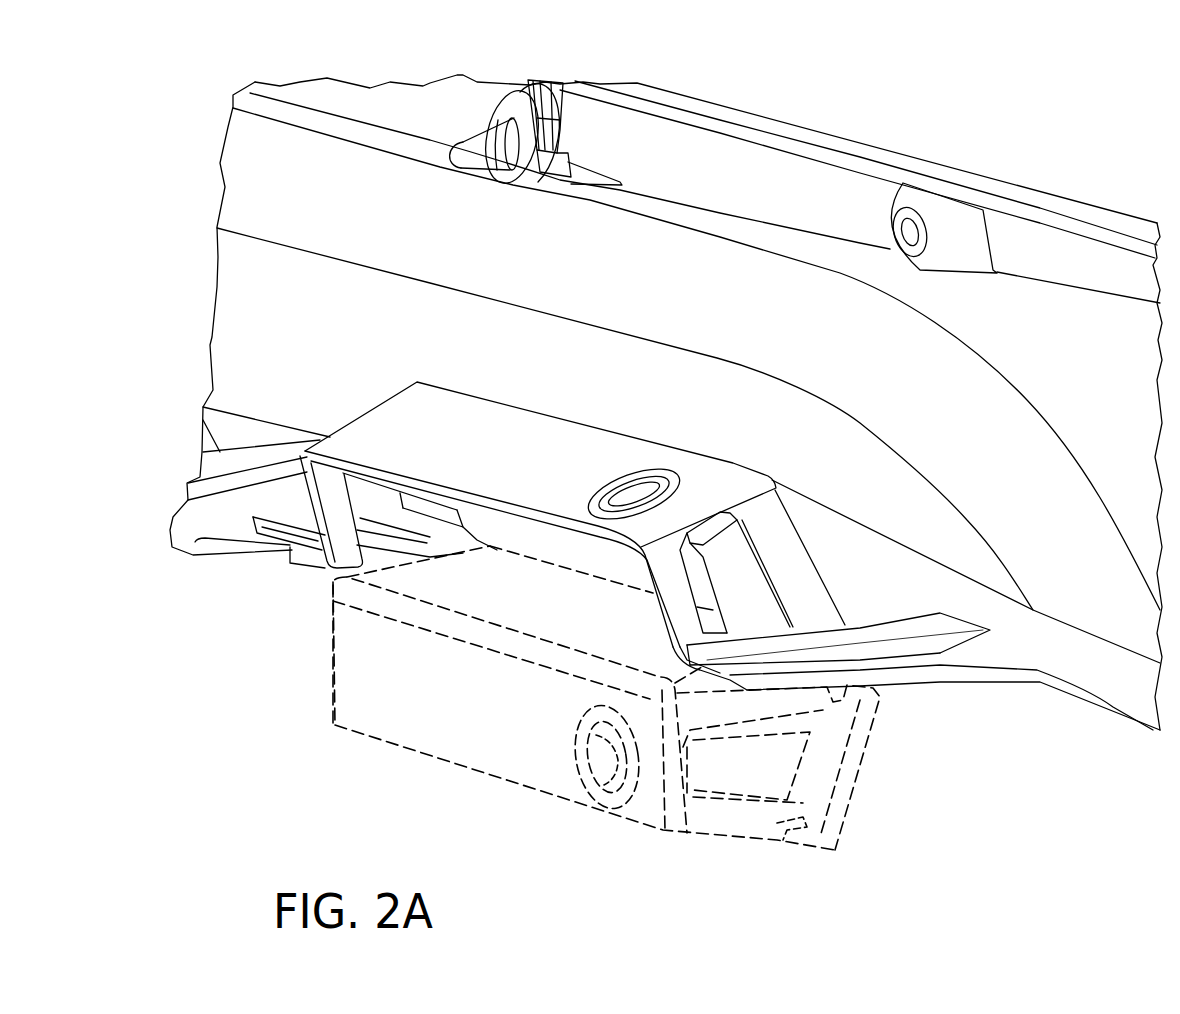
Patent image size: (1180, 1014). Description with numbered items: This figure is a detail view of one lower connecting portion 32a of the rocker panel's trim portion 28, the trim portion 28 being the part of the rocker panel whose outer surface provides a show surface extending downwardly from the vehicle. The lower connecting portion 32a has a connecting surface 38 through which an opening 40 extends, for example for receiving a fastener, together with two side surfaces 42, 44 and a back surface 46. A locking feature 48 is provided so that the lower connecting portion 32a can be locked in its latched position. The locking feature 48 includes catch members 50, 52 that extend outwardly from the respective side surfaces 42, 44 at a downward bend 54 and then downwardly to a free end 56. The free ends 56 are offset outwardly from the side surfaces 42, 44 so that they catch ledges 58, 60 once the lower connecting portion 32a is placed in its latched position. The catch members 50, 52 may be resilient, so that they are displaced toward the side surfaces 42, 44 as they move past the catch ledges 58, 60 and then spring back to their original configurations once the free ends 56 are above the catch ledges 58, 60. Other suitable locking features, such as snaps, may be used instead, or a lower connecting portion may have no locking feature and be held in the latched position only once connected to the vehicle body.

The trim portion 28 is at (1040, 134).
The lower connecting portion 32a is at (348, 777).
The connecting surface 38 is at (360, 672).
The opening 40 is at (603, 767).
The side surface 42 is at (327, 628).
The side surface 44 is at (732, 821).
The back surface 46 is at (532, 587).
The locking feature 48 is at (893, 767).
The catch member 50 is at (363, 490).
The catch member 52 is at (748, 572).
The downward bend 54 is at (722, 533).
The free end 56 is at (767, 630).
The catch ledge 58 is at (300, 517).
The catch ledge 60 is at (948, 623).